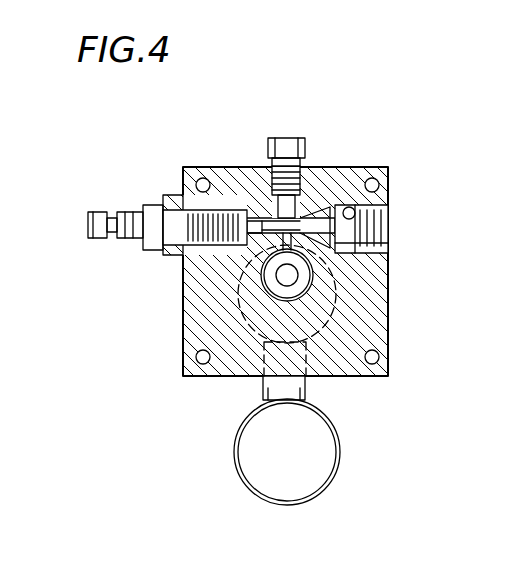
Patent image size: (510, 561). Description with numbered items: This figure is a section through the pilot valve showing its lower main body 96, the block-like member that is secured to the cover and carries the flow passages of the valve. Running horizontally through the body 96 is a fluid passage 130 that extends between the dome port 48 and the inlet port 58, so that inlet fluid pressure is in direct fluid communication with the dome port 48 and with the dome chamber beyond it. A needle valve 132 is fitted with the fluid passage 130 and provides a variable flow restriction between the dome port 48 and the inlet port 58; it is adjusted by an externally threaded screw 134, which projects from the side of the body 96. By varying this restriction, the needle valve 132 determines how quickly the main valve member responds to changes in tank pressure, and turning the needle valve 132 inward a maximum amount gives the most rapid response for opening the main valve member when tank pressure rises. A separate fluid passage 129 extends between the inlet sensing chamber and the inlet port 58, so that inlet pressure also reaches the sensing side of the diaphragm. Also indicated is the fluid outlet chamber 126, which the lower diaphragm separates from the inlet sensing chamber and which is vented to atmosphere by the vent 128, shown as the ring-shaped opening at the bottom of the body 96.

The lower main body 96 is at (190, 390).
The fluid outlet chamber 126 is at (327, 305).
The dome port 48 is at (300, 278).
The needle valve 132 is at (272, 218).
The fluid passage 130 is at (324, 222).
The inlet port 58 is at (390, 213).
The fluid passage 129 is at (352, 218).
The externally threaded screw 134 is at (90, 233).
The vent 128 is at (338, 460).